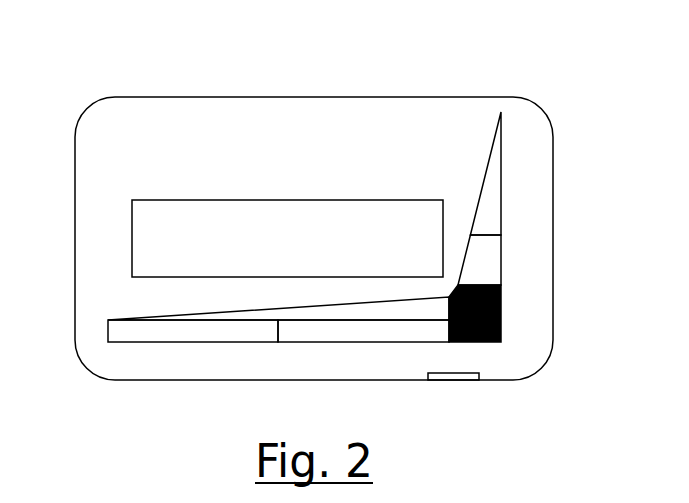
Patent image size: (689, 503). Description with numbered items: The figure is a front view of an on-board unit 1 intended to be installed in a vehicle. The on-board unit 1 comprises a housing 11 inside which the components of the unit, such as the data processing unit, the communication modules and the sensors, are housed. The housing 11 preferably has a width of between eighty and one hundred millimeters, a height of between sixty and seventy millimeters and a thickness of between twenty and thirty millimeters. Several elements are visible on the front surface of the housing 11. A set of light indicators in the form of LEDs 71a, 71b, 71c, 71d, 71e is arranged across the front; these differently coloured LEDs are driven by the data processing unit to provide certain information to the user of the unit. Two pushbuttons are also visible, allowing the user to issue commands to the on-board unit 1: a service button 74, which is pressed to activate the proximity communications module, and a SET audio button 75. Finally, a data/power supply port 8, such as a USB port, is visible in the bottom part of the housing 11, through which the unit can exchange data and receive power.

The on-board unit 1 is at (543, 67).
The housing 11 is at (75, 180).
The service button 74 is at (287, 238).
The LED 71a is at (193, 331).
The LED 71b is at (363, 331).
The LED 71c is at (278, 308).
The LED 71d is at (485, 173).
The fifth segment of light guide 71e is at (479, 260).
The SET audio button 75 is at (501, 318).
The data/power supply port 8 is at (455, 381).